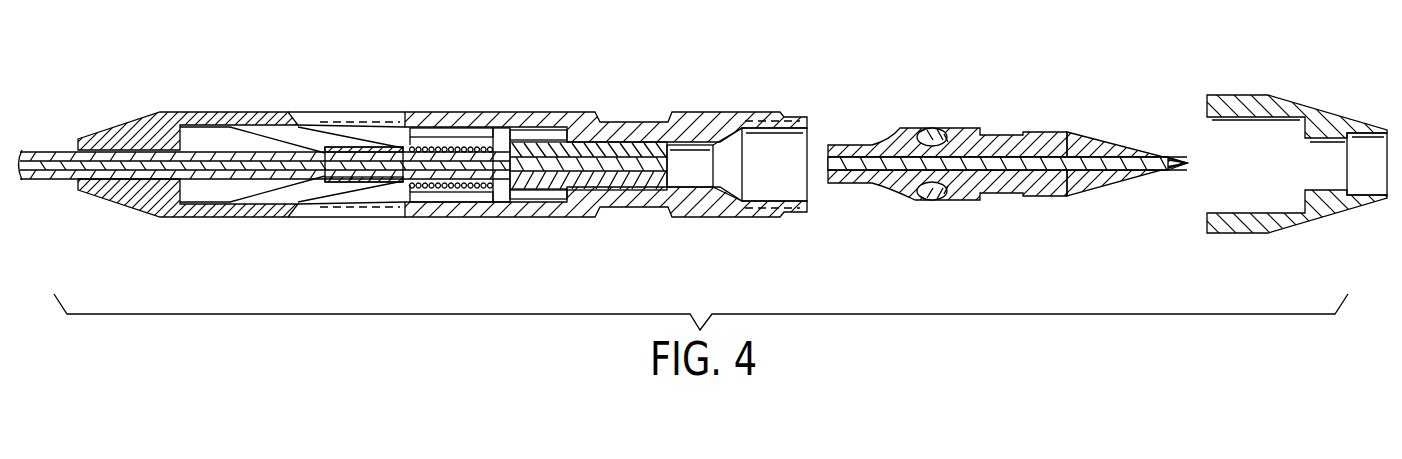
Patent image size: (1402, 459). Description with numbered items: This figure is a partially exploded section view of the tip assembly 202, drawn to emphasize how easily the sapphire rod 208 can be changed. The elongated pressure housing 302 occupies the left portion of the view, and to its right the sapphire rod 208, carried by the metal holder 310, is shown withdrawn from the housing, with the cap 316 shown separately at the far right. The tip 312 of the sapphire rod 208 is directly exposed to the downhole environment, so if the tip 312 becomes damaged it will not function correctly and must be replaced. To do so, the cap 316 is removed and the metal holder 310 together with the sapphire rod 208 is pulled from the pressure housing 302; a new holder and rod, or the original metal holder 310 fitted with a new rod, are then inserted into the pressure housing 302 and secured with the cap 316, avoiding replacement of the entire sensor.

The tip assembly 202 is at (987, 32).
The pressure housing 302 is at (432, 119).
The sapphire rod 208 is at (1053, 168).
The metal holder 310 is at (1065, 142).
The tip 312 is at (1185, 162).
The cap 316 is at (1245, 222).